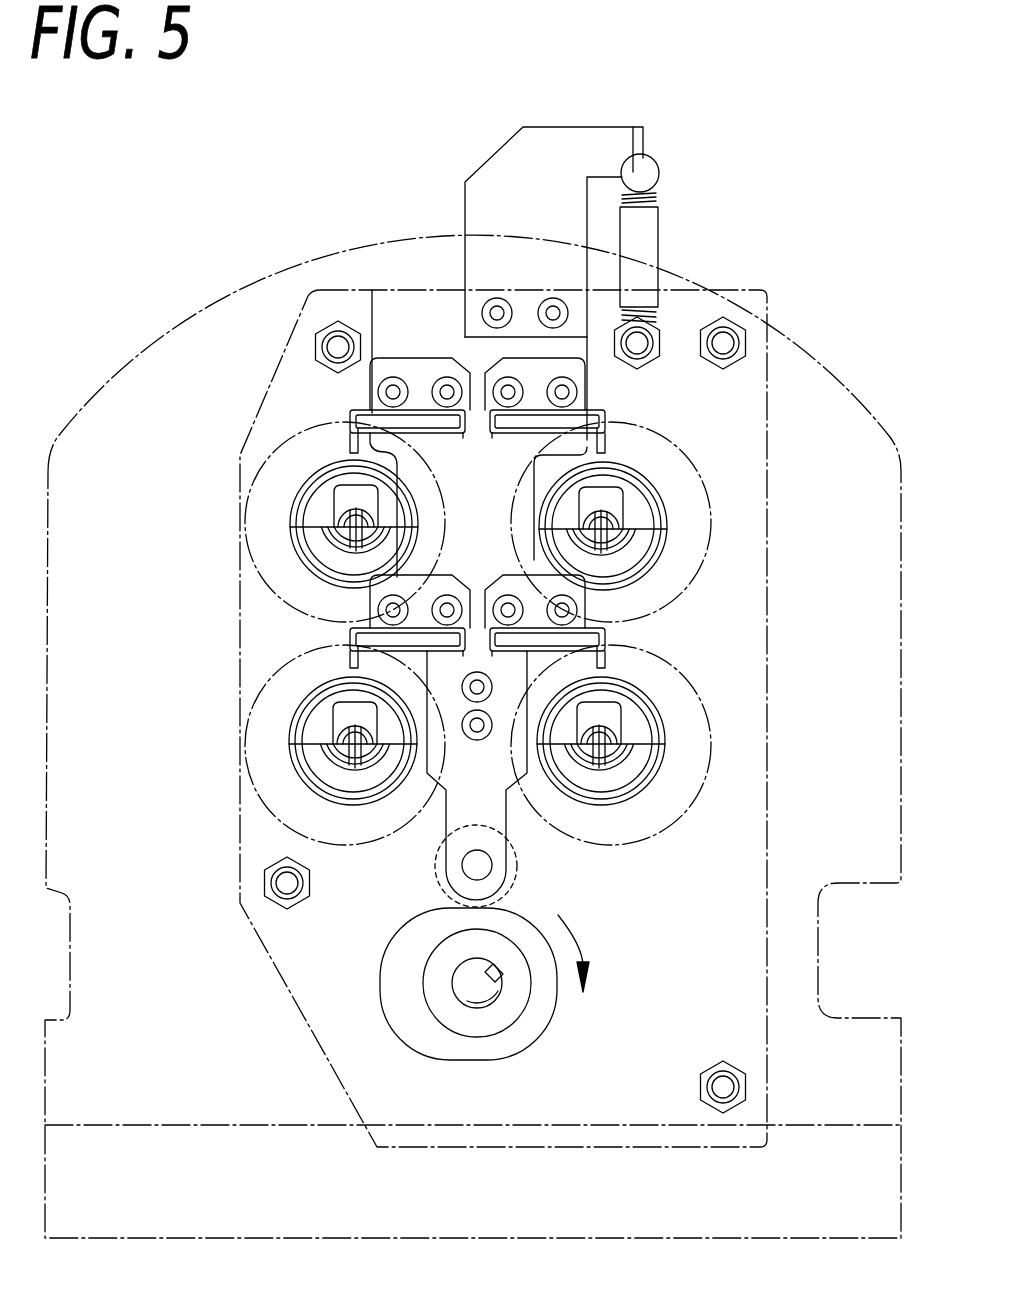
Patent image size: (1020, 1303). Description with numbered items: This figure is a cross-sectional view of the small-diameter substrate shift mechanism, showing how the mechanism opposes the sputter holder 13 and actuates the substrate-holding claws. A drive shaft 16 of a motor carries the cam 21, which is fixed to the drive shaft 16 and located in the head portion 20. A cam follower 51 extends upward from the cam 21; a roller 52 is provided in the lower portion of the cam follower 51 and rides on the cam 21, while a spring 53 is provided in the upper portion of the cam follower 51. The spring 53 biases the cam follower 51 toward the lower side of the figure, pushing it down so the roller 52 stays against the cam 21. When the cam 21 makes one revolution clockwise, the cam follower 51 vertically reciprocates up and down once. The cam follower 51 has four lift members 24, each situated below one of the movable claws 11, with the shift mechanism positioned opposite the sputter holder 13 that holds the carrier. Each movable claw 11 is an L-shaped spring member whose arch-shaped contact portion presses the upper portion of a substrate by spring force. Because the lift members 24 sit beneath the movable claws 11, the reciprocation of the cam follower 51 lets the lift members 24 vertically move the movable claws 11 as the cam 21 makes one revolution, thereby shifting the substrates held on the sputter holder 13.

The movable claw 11 is at (350, 418).
The sputter holder 13 is at (277, 273).
The drive shaft 16 is at (465, 997).
The head portion 20 is at (430, 1157).
The cam 21 is at (388, 1012).
The lift member 24 is at (300, 468).
The cam follower 51 is at (450, 770).
The roller 52 is at (517, 867).
The spring 53 is at (645, 200).